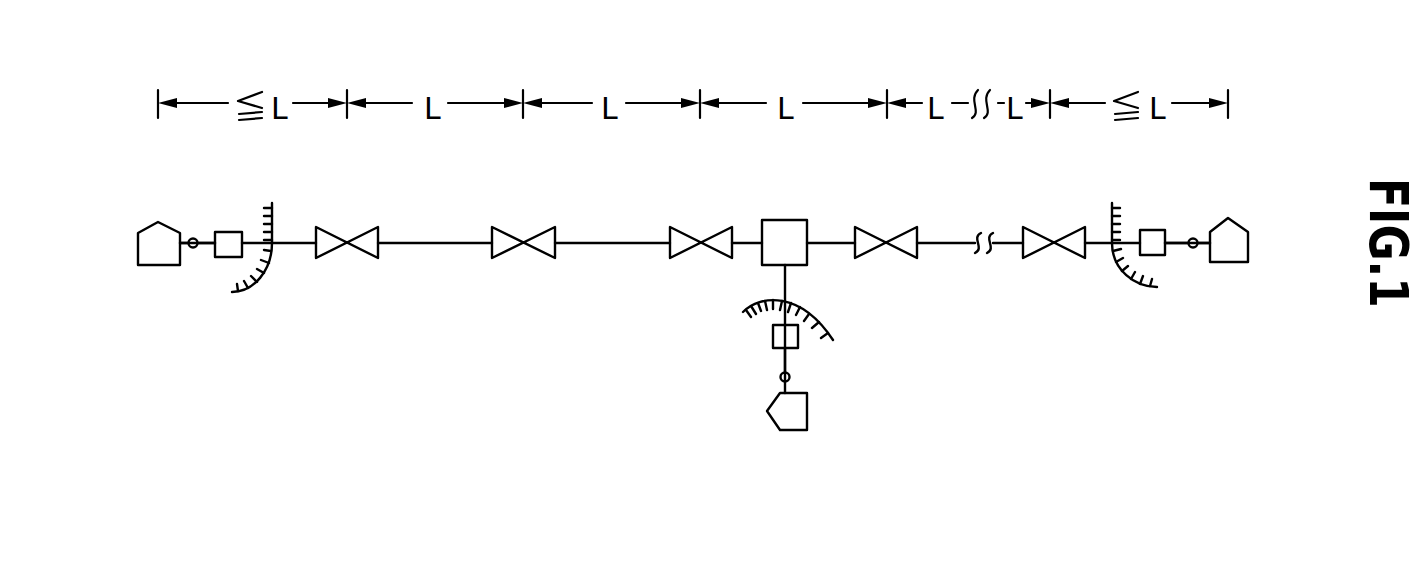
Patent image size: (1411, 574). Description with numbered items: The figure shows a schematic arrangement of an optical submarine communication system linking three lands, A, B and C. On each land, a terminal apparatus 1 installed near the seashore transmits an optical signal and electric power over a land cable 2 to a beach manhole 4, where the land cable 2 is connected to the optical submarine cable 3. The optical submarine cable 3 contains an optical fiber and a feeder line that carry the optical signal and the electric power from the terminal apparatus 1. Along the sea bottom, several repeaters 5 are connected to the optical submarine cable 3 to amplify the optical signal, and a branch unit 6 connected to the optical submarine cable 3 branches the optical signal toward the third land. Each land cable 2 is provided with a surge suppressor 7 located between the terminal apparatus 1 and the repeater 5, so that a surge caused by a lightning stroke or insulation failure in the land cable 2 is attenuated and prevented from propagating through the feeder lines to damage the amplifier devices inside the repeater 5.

The terminal apparatus 1 is at (150, 224).
The land cable 2 is at (200, 240).
The optical submarine cable 3 is at (297, 244).
The beach manhole 4 is at (222, 258).
The repeater 5 is at (337, 259).
The branch unit 6 is at (793, 220).
The surge suppressor 7 is at (193, 250).